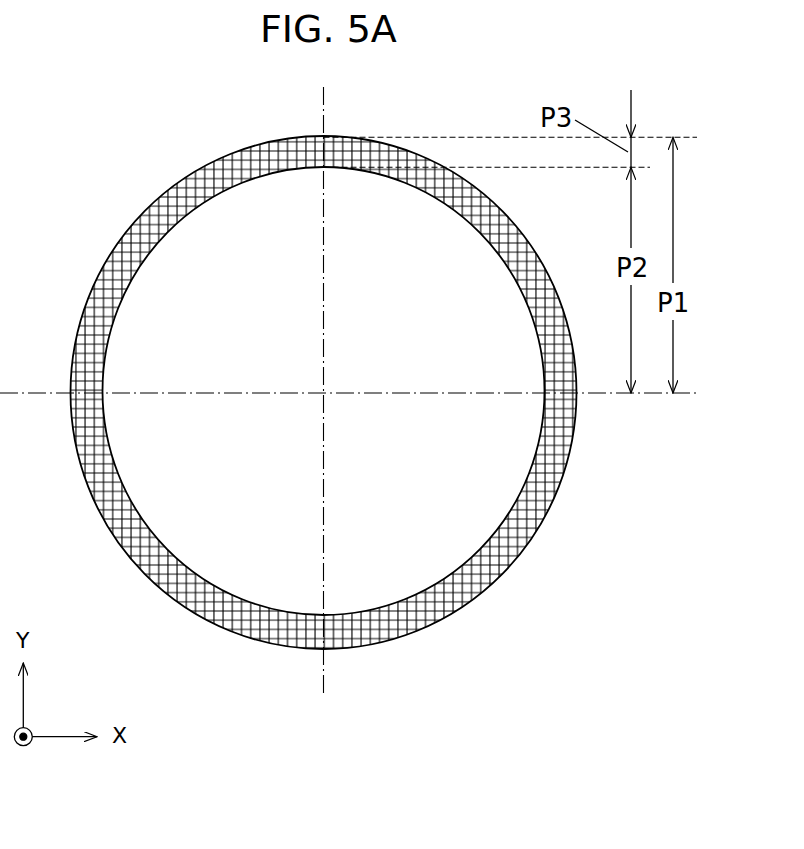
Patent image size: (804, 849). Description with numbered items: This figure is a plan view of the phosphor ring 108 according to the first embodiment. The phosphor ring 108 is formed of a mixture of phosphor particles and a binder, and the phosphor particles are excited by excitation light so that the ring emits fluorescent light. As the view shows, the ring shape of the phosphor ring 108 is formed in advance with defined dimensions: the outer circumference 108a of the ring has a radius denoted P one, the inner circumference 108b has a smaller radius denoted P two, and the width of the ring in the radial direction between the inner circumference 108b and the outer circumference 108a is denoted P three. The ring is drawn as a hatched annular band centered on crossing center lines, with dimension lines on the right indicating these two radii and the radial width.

The phosphor ring 108 is at (324, 358).
The outer circumference 108a is at (320, 138).
The inner circumference 108b is at (323, 170).